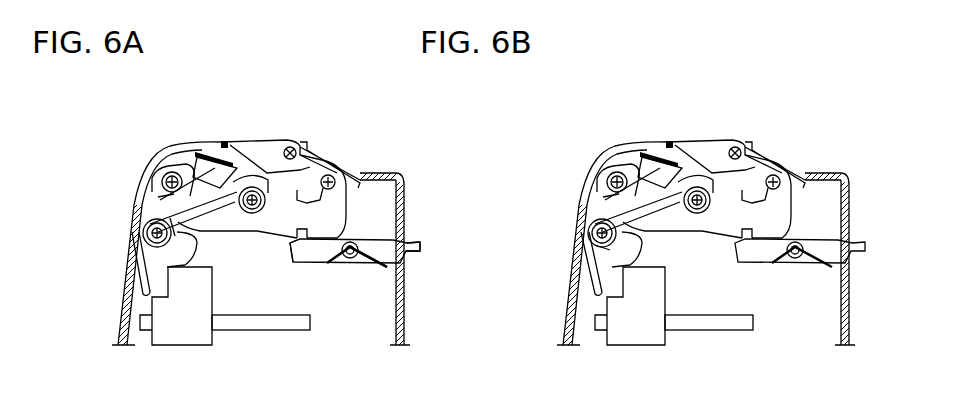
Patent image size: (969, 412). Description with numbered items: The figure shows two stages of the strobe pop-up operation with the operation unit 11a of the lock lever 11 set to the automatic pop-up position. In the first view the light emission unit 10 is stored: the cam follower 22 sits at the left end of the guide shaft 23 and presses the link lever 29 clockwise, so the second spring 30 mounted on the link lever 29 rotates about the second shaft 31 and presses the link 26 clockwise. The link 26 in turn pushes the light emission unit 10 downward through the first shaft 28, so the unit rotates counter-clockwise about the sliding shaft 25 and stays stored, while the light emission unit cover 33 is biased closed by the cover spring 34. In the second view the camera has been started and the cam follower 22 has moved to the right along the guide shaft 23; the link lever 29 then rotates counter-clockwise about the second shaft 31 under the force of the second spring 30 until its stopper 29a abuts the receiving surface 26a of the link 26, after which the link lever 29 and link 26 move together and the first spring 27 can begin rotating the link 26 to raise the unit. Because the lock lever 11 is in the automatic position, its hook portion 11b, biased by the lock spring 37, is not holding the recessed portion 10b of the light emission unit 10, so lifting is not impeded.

In FIG. 6A, the light emission unit 10 is at (162, 147).
In FIG. 6B, the light emission unit 10 is at (706, 243).
In FIG. 6A, the recessed portion 10b is at (332, 240).
In FIG. 6B, the recessed portion 10b is at (740, 269).
In FIG. 6A, the lock lever 11 is at (367, 263).
In FIG. 6B, the lock lever 11 is at (800, 281).
In FIG. 6A, the operation unit 11a is at (416, 244).
In FIG. 6A, the hook portion 11b is at (292, 260).
In FIG. 6A, the cam follower 22 is at (188, 337).
In FIG. 6B, the cam follower 22 is at (633, 333).
In FIG. 6A, the guide shaft 23 is at (262, 323).
In FIG. 6B, the guide shaft 23 is at (709, 349).
In FIG. 6A, the sliding shaft 25 is at (342, 160).
In FIG. 6B, the sliding shaft 25 is at (763, 164).
In FIG. 6A, the link 26 is at (215, 217).
In FIG. 6B, the link 26 is at (693, 159).
In FIG. 6A, the receiving surface 26a is at (172, 227).
In FIG. 6B, the receiving surface 26a is at (636, 156).
In FIG. 6A, the first spring 27 is at (273, 143).
In FIG. 6B, the first spring 27 is at (695, 194).
In FIG. 6A, the first shaft 28 is at (227, 139).
In FIG. 6B, the first shaft 28 is at (669, 144).
In FIG. 6A, the link lever 29 is at (137, 270).
In FIG. 6B, the link lever 29 is at (552, 274).
In FIG. 6B, the stopper 29a is at (550, 255).
In FIG. 6A, the second spring 30 is at (140, 230).
In FIG. 6B, the second spring 30 is at (574, 226).
In FIG. 6A, the second shaft 31 is at (136, 212).
In FIG. 6B, the second shaft 31 is at (587, 173).
In FIG. 6A, the light emission unit cover 33 is at (274, 146).
In FIG. 6B, the light emission unit cover 33 is at (754, 168).
In FIG. 6A, the cover spring 34 is at (307, 148).
In FIG. 6B, the cover spring 34 is at (775, 165).
In FIG. 6A, the lock spring 37 is at (372, 272).